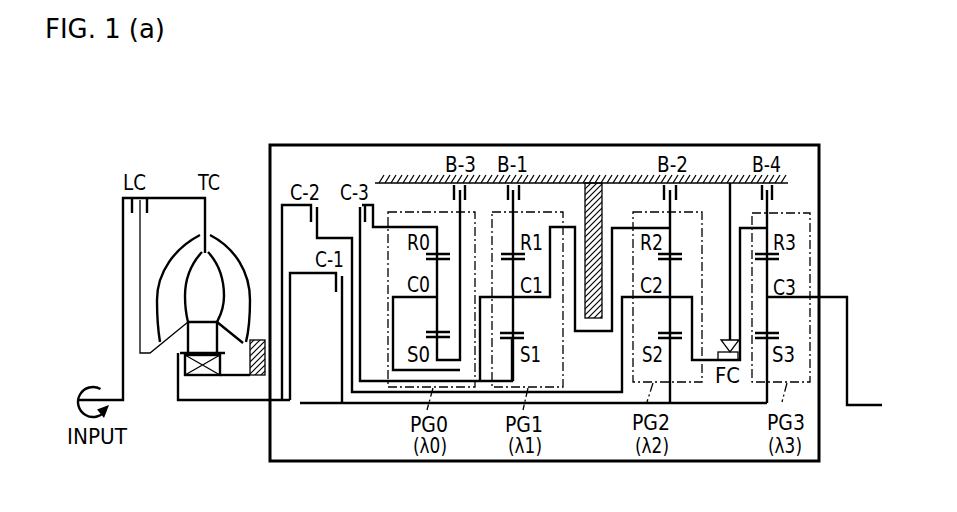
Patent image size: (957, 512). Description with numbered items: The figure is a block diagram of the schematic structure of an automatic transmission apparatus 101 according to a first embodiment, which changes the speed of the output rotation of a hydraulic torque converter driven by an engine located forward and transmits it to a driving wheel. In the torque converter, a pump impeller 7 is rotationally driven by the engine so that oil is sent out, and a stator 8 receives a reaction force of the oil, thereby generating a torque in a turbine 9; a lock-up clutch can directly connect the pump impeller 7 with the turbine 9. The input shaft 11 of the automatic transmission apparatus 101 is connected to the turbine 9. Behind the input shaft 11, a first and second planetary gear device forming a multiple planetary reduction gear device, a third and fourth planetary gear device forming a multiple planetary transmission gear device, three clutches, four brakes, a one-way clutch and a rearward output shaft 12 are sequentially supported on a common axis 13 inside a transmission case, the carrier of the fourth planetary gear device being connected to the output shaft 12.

The pump impeller 7 is at (228, 259).
The stator 8 is at (188, 335).
The turbine 9 is at (178, 259).
The input shaft 11 is at (230, 405).
The output shaft 12 is at (867, 407).
The common axis 13 is at (314, 404).
The automatic transmission apparatus 101 is at (586, 144).